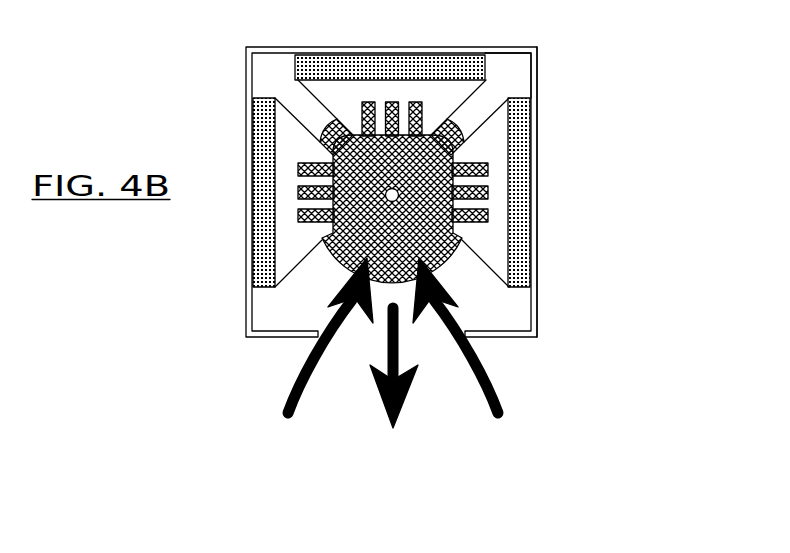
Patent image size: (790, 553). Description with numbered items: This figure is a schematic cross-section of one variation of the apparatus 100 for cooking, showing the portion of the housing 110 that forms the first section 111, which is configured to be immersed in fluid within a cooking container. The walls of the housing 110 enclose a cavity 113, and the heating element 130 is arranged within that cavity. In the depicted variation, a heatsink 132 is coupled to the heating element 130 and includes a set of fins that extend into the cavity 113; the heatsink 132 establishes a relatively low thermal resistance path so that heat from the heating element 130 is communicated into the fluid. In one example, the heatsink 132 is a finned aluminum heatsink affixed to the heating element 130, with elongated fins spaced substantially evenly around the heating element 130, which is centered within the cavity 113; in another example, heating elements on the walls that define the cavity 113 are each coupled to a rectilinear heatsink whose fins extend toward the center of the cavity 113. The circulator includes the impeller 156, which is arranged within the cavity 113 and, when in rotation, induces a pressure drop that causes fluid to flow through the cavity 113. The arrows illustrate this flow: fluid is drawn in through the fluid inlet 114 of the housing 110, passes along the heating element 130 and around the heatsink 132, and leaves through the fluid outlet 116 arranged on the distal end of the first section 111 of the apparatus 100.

The apparatus for cooking 100 is at (200, 69).
The housing 110 is at (537, 211).
The first section 111 is at (556, 248).
The cavity 113 is at (525, 76).
The first fluid inlet 114 is at (317, 353).
The fluid outlet 116 is at (355, 380).
The heating element 130 is at (520, 167).
The heatsink 132 is at (495, 128).
The impeller 156 is at (438, 262).